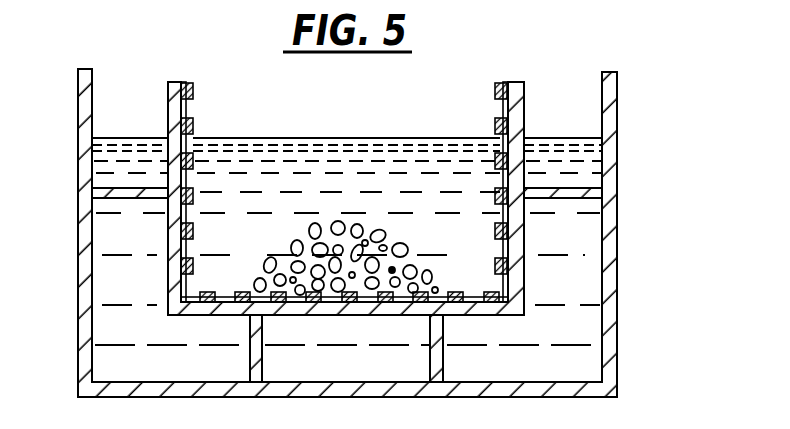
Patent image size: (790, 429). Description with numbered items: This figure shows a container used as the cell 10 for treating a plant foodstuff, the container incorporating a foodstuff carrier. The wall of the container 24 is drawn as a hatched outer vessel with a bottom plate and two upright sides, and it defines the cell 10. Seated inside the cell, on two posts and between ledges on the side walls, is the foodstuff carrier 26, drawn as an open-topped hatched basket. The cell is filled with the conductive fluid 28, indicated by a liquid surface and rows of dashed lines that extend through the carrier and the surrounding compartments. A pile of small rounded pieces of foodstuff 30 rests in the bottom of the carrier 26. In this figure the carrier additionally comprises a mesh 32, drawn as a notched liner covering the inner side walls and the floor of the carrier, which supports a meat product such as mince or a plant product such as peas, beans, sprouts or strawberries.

The cell 10 is at (393, 233).
The wall of the container 24 is at (608, 368).
The foodstuff carrier 26 is at (168, 247).
The conductive fluid 28 is at (585, 168).
The foodstuff 30 is at (345, 237).
The mesh 32 is at (193, 131).